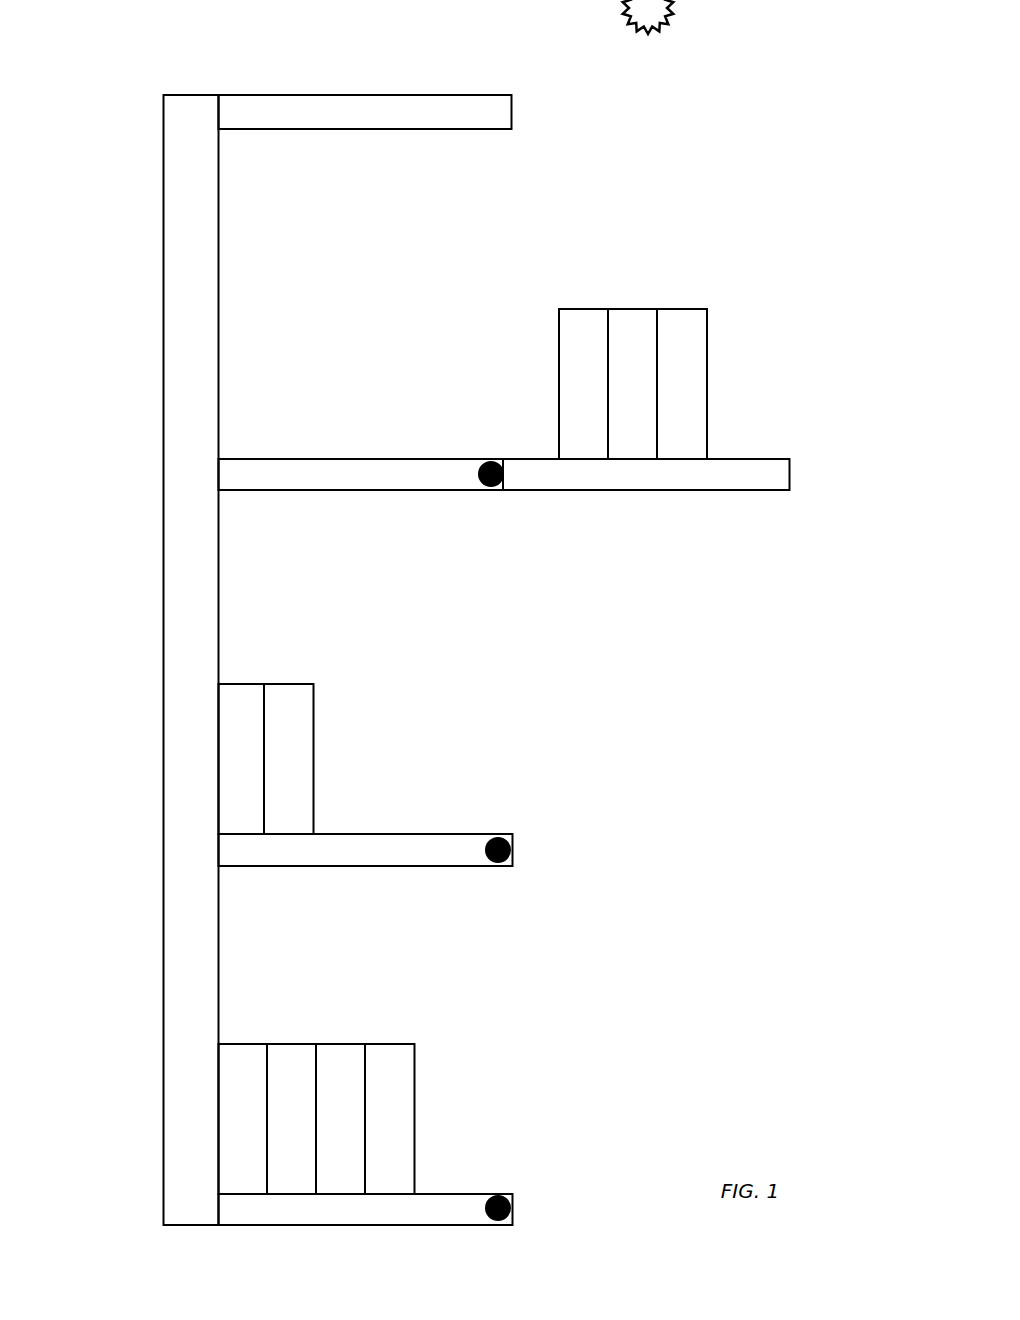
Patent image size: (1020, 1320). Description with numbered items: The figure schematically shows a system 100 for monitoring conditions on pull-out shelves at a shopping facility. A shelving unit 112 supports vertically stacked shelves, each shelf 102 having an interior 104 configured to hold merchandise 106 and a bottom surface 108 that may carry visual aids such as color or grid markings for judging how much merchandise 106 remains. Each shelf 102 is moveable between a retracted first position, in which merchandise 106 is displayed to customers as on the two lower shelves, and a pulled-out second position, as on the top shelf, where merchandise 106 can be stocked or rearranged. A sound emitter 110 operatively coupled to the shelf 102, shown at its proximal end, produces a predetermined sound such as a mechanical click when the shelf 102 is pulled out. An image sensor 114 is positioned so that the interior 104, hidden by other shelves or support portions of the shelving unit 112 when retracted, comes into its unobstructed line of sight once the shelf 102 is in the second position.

The system 100 is at (130, 72).
The shelf 102 is at (384, 477).
The interior 104 is at (462, 372).
The merchandise 106 is at (294, 702).
The bottom surface 108 is at (377, 834).
The sound emitter 110 is at (505, 1195).
The shelving unit 112 is at (193, 372).
The image sensor 114 is at (655, 15).